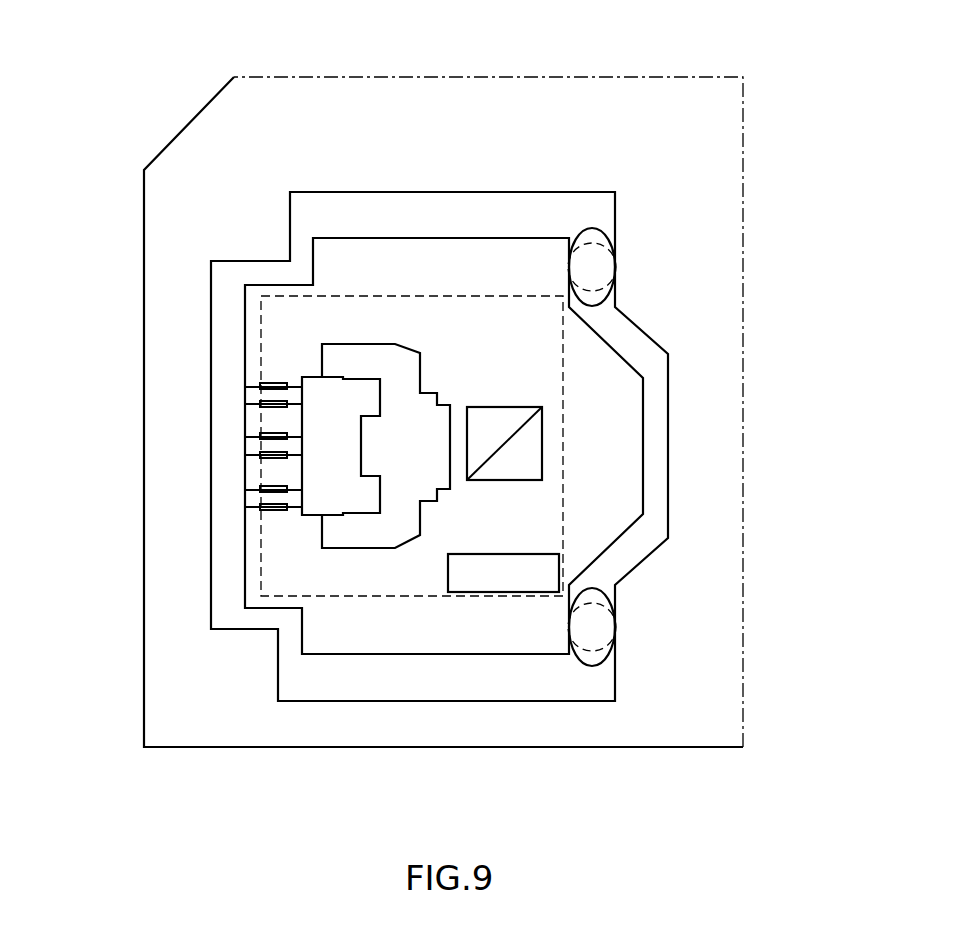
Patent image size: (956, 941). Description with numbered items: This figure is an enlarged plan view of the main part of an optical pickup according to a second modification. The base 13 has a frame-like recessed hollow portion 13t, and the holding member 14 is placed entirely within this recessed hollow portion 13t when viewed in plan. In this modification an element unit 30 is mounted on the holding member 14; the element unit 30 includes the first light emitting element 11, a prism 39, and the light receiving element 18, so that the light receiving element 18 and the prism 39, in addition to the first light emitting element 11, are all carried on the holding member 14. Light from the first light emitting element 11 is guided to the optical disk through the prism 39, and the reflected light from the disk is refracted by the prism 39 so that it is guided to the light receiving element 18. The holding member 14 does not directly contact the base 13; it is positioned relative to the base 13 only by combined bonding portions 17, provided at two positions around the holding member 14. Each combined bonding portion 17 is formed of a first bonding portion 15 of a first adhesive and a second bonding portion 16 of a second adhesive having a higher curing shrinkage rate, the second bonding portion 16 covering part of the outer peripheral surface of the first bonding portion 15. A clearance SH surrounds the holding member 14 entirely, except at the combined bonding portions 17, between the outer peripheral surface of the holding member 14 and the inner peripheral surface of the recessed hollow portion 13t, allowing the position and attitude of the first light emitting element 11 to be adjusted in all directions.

The base 13 is at (143, 243).
The recessed hollow portion 13t is at (347, 190).
The holding member 14 is at (432, 265).
The element unit 30 is at (261, 332).
The first light emitting element 11 is at (318, 420).
The prism 39 is at (530, 433).
The light receiving element 18 is at (498, 580).
The first bonding portion 15 is at (592, 265).
The second bonding portion 16 is at (590, 236).
The combined bonding portion 17 is at (797, 215).
The clearance SH is at (228, 515).